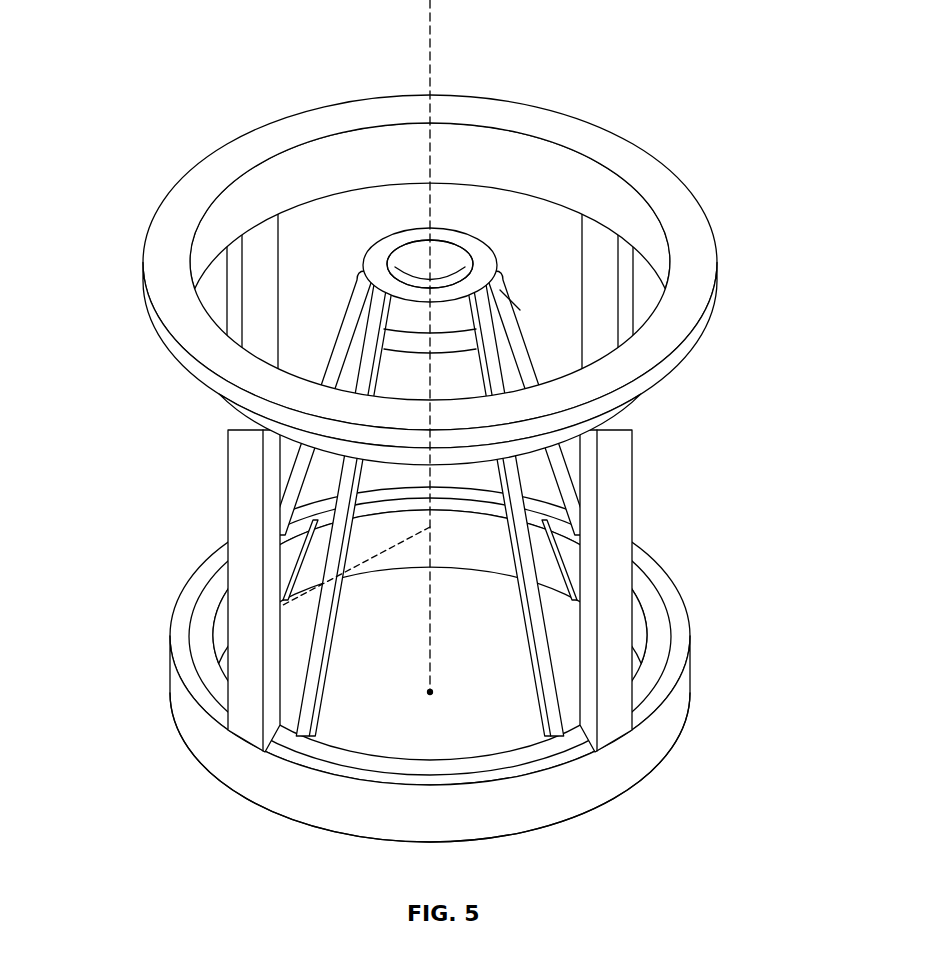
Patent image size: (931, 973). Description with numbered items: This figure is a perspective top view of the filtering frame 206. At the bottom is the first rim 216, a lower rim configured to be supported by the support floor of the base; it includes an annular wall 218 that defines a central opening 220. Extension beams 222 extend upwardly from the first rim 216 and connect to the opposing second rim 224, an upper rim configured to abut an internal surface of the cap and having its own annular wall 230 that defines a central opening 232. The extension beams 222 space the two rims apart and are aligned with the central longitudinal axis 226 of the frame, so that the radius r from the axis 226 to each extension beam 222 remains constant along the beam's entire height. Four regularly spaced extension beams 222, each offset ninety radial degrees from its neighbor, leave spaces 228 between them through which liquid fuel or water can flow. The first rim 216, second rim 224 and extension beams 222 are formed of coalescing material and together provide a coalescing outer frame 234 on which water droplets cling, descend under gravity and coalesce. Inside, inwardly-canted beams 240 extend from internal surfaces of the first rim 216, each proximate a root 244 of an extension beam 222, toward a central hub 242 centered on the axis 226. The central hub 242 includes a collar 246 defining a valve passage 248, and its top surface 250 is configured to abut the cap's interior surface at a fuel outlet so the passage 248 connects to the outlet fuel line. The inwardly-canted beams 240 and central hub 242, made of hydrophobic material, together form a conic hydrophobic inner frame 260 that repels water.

The filtering frame 206 is at (137, 118).
The first rim 216 is at (438, 664).
The annular wall 218 is at (563, 797).
The central opening 220 is at (300, 806).
The extension beams 222 is at (280, 254).
The second rim 224 is at (406, 268).
The central longitudinal axis 226 is at (436, 74).
The spaces 228 is at (170, 450).
The annular wall 230 is at (142, 272).
The central opening 232 is at (405, 170).
The coalescing outer frame 234 is at (116, 349).
The inwardly-canted beams 240 is at (343, 347).
The central hub 242 is at (395, 244).
The root 244 is at (180, 742).
The collar 246 is at (498, 266).
The valve passage 248 is at (458, 262).
The top surface 250 is at (362, 262).
The conic hydrophobic inner frame 260 is at (522, 304).
The radius r is at (362, 567).